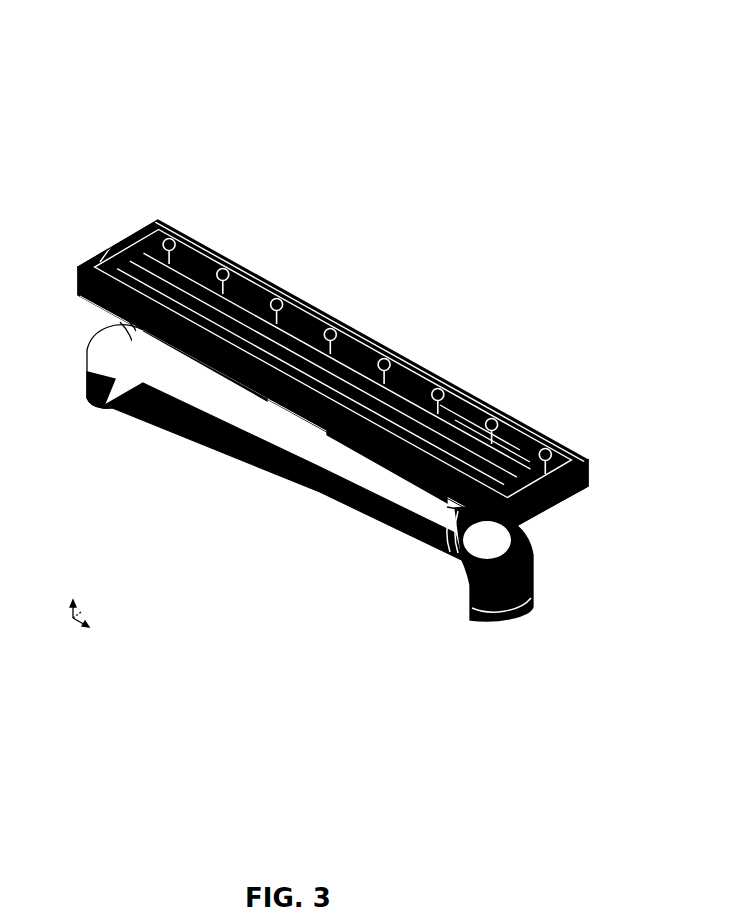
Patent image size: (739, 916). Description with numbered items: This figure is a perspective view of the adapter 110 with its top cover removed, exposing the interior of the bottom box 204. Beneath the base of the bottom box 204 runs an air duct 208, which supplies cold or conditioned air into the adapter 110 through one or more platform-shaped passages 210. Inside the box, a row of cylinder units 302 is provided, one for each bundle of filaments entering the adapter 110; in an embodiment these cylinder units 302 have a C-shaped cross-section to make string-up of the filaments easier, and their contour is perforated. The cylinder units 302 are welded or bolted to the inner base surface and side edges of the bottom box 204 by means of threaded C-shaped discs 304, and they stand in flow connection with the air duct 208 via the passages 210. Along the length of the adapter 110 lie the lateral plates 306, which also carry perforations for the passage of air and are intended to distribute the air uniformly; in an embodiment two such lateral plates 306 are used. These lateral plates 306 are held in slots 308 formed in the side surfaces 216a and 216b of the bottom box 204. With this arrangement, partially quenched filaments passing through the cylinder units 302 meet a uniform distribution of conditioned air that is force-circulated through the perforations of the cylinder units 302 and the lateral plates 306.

The adapter 110 is at (351, 362).
The bottom box 204 is at (407, 468).
The air duct 208 is at (500, 590).
The passages 210 is at (367, 468).
The side surface 216a is at (543, 505).
The side surface 216b is at (97, 260).
The cylinder unit 302 is at (247, 280).
The threaded C-shaped disc 304 is at (462, 392).
The lateral plate 306 is at (282, 290).
The slot 308 is at (108, 257).